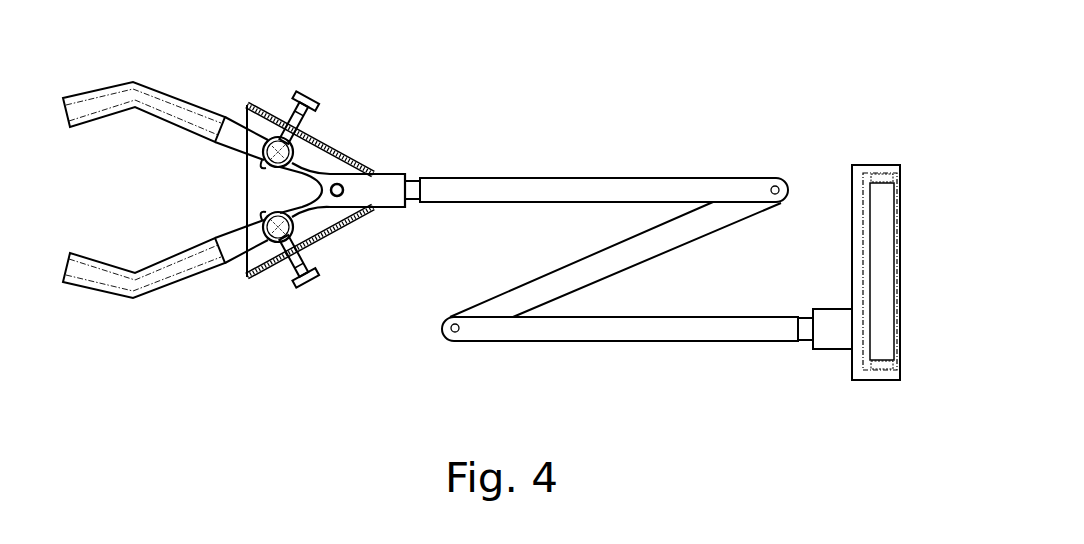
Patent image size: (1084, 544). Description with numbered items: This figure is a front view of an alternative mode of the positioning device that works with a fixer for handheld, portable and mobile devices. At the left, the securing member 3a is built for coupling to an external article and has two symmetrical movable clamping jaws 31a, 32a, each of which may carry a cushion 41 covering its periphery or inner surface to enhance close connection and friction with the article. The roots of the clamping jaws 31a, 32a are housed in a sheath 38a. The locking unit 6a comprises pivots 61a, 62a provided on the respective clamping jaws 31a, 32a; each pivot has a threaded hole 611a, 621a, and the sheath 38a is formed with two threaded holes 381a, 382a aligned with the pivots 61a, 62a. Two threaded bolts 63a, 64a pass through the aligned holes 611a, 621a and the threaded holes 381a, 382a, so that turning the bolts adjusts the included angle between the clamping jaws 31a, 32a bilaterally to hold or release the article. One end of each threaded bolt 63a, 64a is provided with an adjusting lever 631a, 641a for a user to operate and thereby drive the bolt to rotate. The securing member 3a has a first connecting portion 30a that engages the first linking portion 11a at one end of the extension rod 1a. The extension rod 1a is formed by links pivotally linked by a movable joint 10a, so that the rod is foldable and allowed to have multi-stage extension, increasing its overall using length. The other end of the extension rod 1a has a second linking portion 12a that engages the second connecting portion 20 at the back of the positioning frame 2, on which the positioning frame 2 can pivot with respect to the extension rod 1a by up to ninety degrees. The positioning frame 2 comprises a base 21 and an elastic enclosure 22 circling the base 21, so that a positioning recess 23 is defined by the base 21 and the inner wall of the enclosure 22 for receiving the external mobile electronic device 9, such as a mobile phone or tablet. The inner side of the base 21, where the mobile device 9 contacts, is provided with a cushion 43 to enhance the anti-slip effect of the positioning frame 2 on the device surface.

The extension rod 1a is at (624, 158).
The positioning frame 2 is at (858, 398).
The securing member 3a is at (364, 242).
The locking unit 6a is at (333, 91).
The external mobile electronic device 9 is at (897, 345).
The movable joint 10a is at (444, 330).
The first linking portion 11a is at (413, 186).
The second linking portion 12a is at (806, 342).
The second connecting portion 20 is at (830, 318).
The base 21 is at (858, 240).
The elastic enclosure 22 is at (882, 167).
The positioning recess 23 is at (895, 178).
The first connecting portion 30a is at (388, 197).
The clamping jaw 31a is at (163, 93).
The clamping jaw 32a is at (165, 286).
The sheath 38a is at (346, 152).
The cushion 41 is at (118, 117).
The cushion 43 is at (872, 178).
The pivot 61a is at (296, 160).
The pivot 62a is at (297, 225).
The threaded bolt 63a is at (289, 108).
The threaded bolt 64a is at (296, 292).
The threaded hole 381a is at (272, 116).
The threaded hole 382a is at (262, 281).
The threaded hole 611a is at (262, 165).
The threaded hole 621a is at (250, 209).
The adjusting lever 631a is at (319, 94).
The adjusting lever 641a is at (310, 292).